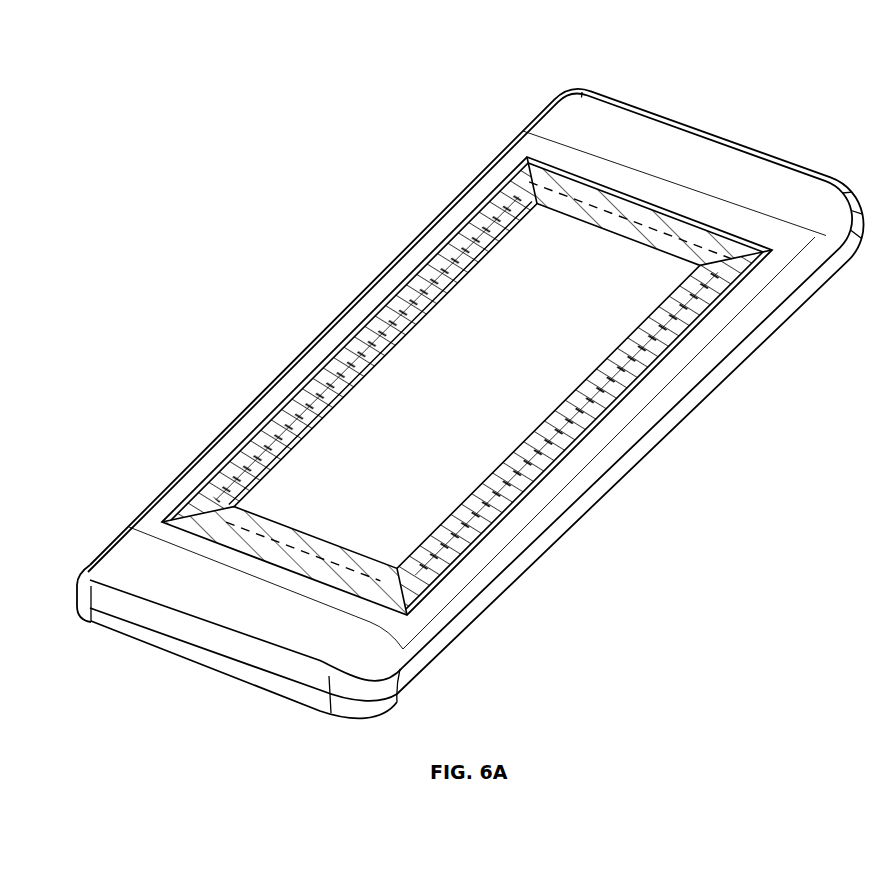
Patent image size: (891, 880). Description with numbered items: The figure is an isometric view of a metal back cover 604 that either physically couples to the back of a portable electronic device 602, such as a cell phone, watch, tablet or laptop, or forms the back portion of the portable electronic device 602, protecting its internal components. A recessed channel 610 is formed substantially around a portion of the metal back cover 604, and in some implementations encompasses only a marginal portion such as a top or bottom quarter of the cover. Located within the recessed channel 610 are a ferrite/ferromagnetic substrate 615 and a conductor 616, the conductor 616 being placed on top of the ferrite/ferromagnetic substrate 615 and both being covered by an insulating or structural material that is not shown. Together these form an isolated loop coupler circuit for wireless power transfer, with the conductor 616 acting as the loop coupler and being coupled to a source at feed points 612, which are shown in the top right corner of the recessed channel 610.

The portable electronic device 602 is at (450, 389).
The metal back cover 604 is at (624, 140).
The recessed channel 610 is at (560, 162).
The feed points 612 is at (739, 267).
The ferrite/ferromagnetic substrate 615 is at (474, 238).
The conductor 616 is at (402, 284).